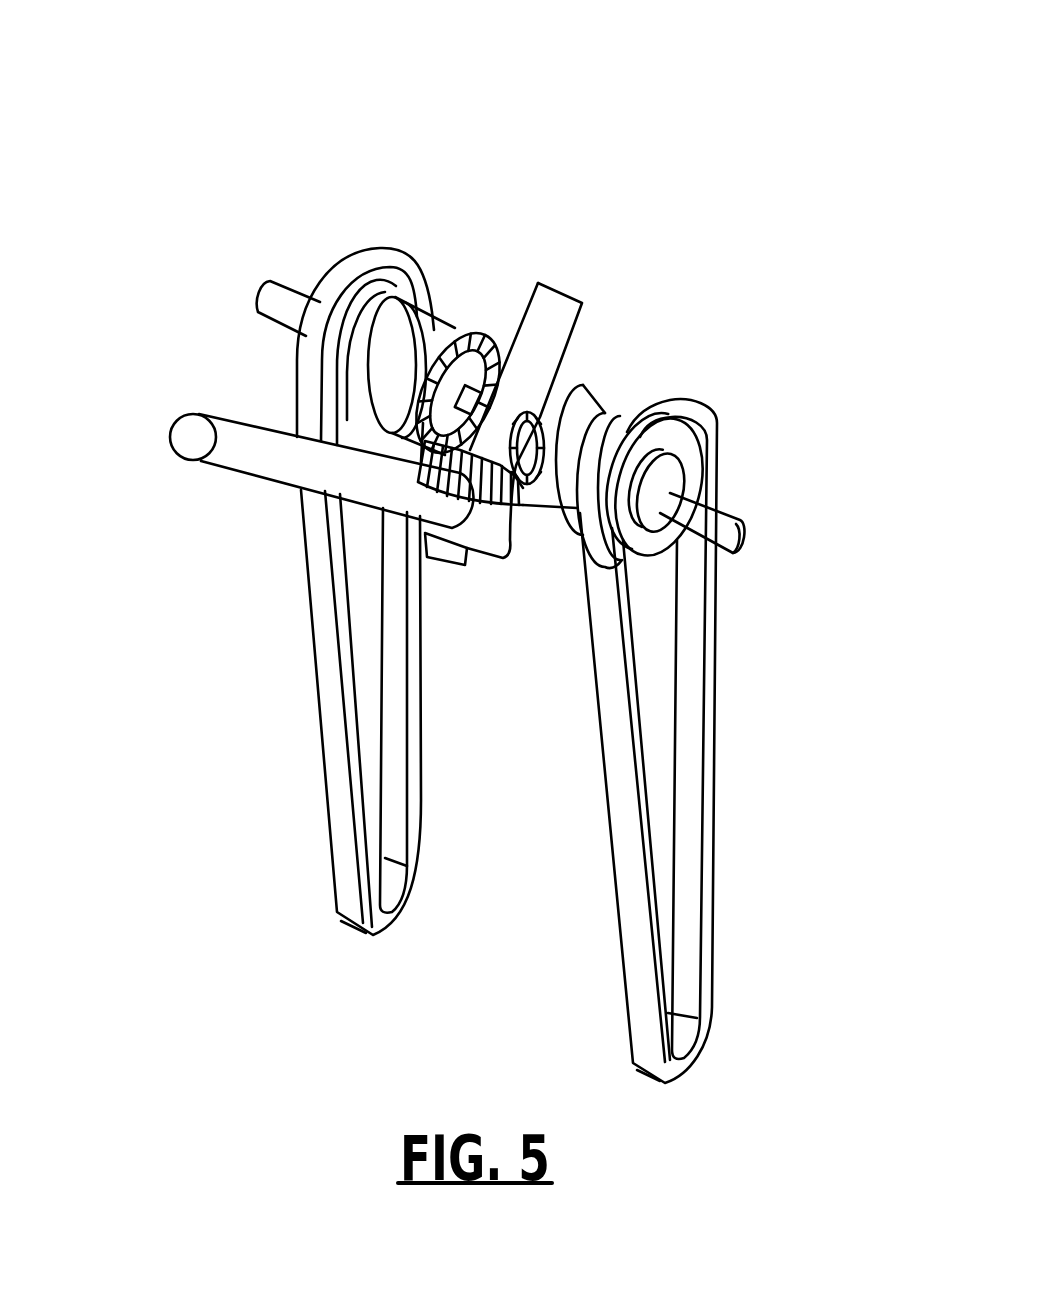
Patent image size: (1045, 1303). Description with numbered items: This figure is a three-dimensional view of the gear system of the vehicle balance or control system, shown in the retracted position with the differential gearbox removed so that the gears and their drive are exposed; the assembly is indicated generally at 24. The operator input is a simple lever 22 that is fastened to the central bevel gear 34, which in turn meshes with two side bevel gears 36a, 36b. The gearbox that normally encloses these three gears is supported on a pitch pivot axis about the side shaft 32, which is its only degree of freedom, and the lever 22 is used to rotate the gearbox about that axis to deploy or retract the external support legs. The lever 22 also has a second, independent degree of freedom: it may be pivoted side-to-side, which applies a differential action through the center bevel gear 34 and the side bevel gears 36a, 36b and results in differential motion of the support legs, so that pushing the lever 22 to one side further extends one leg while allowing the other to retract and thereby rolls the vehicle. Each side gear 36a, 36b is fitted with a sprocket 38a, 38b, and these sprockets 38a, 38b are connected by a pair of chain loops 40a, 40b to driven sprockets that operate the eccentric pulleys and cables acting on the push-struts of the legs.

The lever 22 is at (197, 430).
The gear drive assembly 24 is at (565, 163).
The side shaft 32 is at (723, 523).
The central bevel gear 34 is at (492, 517).
The side bevel gear 36a is at (453, 325).
The side bevel gear 36b is at (600, 417).
The sprocket 38a is at (357, 370).
The sprocket 38b is at (707, 430).
The chain loop 40a is at (330, 672).
The chain loop 40b is at (648, 995).